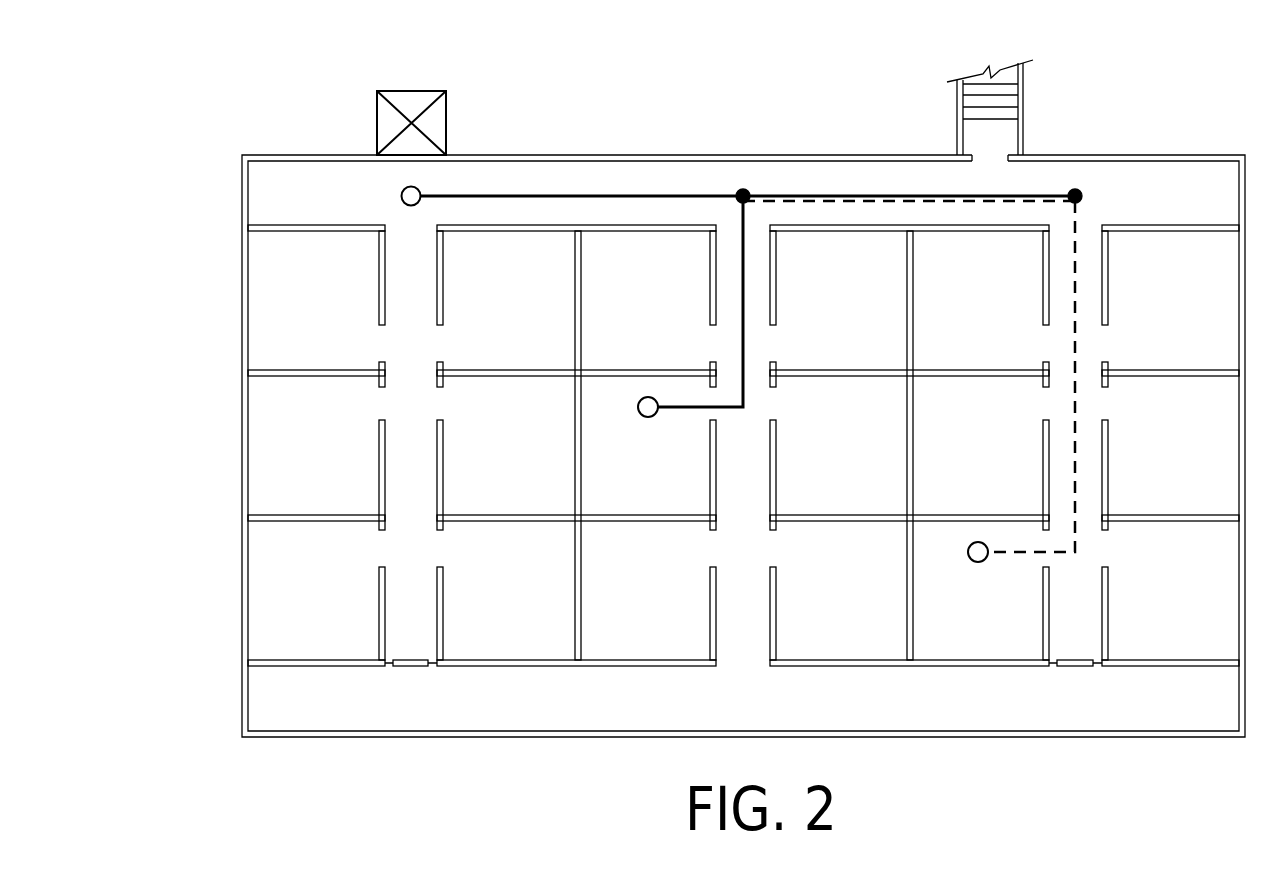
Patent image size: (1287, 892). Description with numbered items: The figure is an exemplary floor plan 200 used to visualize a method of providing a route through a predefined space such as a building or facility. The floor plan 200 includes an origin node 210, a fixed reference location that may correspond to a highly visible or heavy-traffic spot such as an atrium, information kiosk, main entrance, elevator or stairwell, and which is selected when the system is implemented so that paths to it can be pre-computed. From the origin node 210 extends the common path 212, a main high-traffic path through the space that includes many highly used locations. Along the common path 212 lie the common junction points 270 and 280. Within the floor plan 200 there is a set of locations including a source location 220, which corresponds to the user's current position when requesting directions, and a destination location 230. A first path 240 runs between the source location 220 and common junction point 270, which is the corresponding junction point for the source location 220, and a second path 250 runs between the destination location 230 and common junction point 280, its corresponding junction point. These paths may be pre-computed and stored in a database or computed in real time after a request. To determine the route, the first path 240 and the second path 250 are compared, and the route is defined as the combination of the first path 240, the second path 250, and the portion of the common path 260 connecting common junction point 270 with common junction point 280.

The floor plan 200 is at (258, 94).
The origin node 210 is at (401, 196).
The common path 212 is at (553, 194).
The source location 220 is at (651, 418).
The destination location 230 is at (982, 563).
The first path 240 is at (746, 345).
The second path 250 is at (1078, 347).
The portion of the common path 260 is at (965, 204).
The common junction point 270 is at (749, 192).
The common junction point 280 is at (1081, 192).